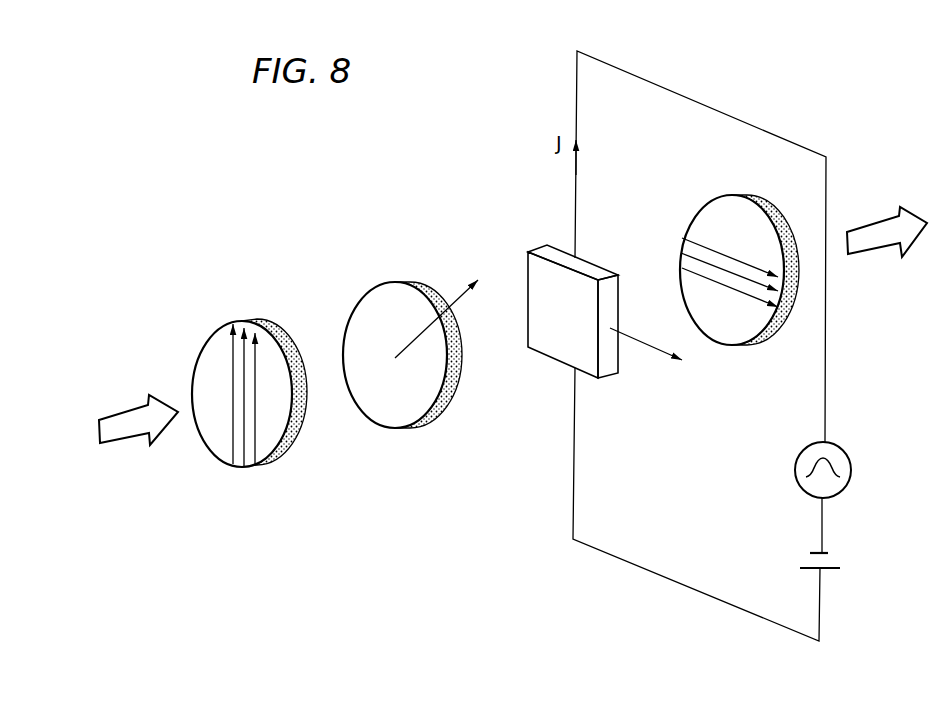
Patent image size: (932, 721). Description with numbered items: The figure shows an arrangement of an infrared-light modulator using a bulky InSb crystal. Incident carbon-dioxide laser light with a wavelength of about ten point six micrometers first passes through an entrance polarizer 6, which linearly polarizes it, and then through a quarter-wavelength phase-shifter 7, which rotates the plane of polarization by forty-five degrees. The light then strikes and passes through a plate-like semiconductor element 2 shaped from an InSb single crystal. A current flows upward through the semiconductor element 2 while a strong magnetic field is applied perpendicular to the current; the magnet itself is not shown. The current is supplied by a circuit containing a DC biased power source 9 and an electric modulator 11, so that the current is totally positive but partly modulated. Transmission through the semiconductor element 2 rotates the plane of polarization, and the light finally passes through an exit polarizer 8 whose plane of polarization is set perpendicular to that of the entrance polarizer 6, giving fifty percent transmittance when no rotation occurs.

The semiconductor element 2 is at (543, 246).
The entrance polarizer 6 is at (208, 348).
The quarter-wavelength phase-shifter 7 is at (358, 312).
The exit polarizer 8 is at (702, 217).
The DC biased power source 9 is at (841, 558).
The electric modulator 11 is at (851, 472).